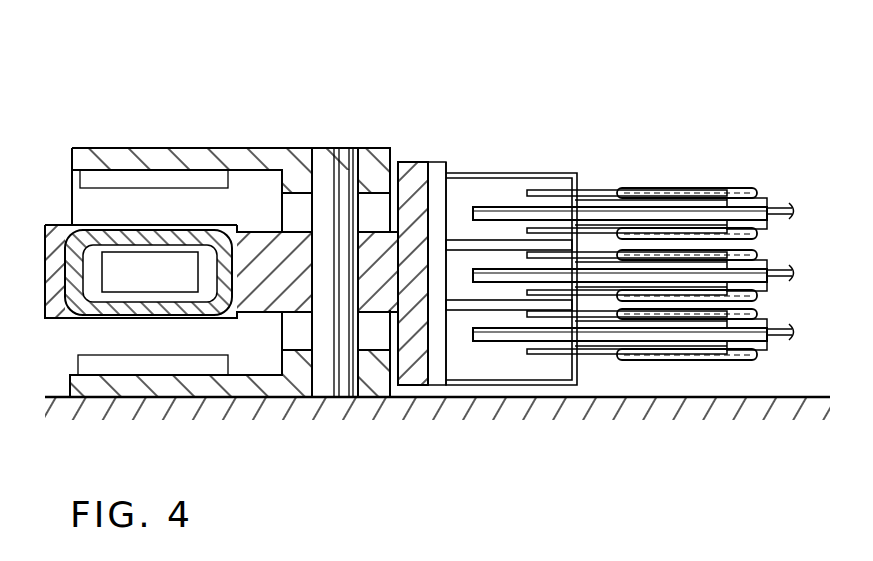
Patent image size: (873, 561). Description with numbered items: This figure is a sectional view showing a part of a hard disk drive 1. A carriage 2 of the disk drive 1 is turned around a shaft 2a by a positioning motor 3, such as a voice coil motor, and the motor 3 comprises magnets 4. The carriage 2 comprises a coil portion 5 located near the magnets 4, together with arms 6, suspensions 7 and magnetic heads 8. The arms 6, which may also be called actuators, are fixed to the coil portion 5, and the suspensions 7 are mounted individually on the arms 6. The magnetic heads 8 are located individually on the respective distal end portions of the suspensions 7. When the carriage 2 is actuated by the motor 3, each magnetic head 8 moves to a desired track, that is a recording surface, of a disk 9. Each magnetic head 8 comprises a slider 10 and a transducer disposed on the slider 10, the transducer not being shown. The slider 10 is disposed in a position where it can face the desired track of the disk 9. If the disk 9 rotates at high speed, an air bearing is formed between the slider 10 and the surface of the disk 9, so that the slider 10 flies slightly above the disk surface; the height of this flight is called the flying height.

The hard disk drive 1 is at (621, 106).
The carriage 2 is at (446, 159).
The shaft 2a is at (334, 158).
The positioning motor 3 is at (236, 146).
The magnets 4 is at (112, 186).
The coil portion 5 is at (213, 230).
The arms 6 is at (479, 174).
The suspensions 7 is at (686, 228).
The magnetic heads 8 is at (783, 226).
The disk 9 is at (511, 271).
The slider 10 is at (741, 200).